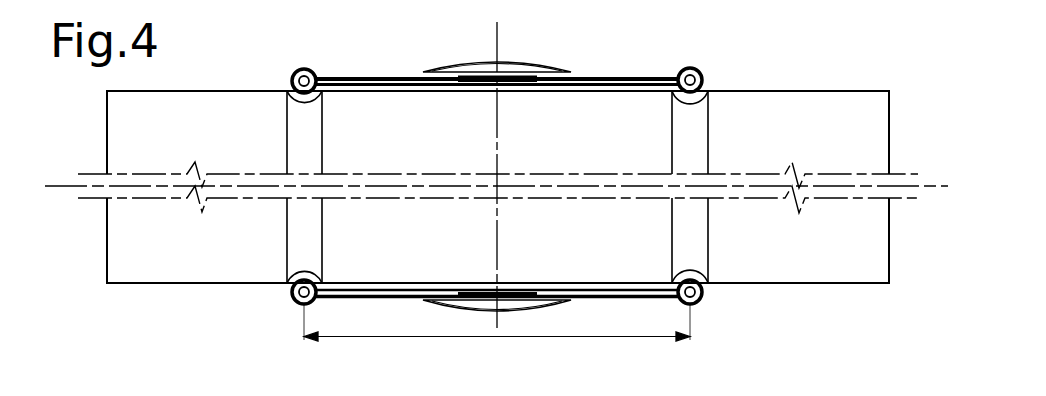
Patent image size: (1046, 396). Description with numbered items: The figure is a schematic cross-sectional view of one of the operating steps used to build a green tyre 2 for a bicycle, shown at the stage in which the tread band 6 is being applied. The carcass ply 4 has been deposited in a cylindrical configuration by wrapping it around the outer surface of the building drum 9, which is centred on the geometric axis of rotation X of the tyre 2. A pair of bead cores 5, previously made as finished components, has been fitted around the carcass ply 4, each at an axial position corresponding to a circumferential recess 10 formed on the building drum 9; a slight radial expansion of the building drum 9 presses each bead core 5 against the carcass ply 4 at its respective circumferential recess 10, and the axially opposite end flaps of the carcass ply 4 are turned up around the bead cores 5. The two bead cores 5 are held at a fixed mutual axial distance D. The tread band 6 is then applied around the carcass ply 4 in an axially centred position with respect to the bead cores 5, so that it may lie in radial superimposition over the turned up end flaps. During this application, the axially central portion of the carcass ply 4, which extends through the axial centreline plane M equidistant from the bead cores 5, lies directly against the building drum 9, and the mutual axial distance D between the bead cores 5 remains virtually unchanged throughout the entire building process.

The tyre 2 is at (526, 161).
The carcass ply 4 is at (608, 288).
The bead core 5 is at (303, 68).
The tread band 6 is at (470, 66).
The building drum 9 is at (852, 120).
The circumferential recess 10 is at (690, 101).
The geometric axis of rotation X is at (753, 186).
The axial centreline plane M is at (497, 42).
The mutual axial distance D is at (500, 333).